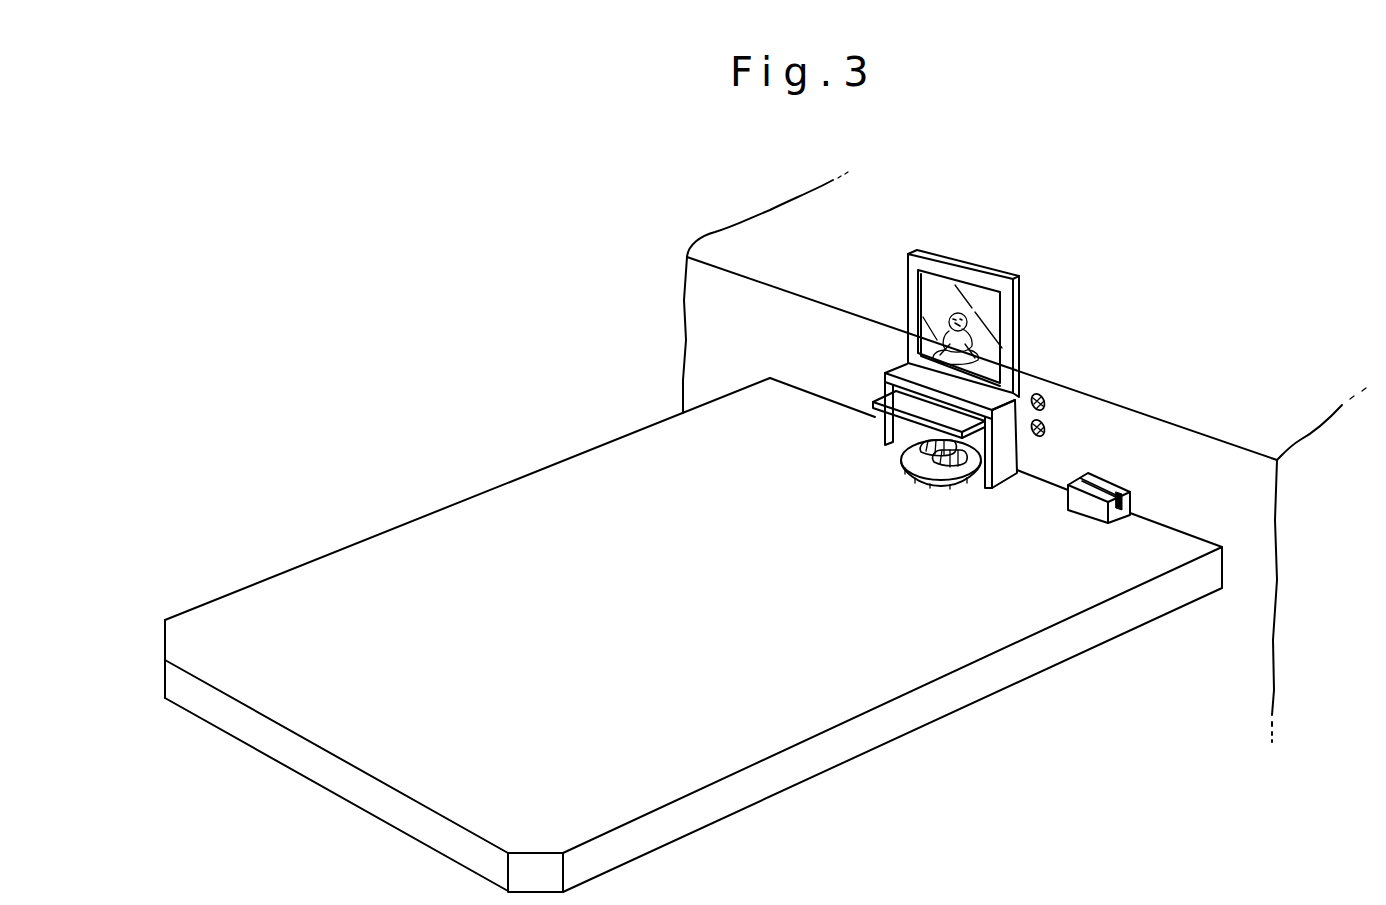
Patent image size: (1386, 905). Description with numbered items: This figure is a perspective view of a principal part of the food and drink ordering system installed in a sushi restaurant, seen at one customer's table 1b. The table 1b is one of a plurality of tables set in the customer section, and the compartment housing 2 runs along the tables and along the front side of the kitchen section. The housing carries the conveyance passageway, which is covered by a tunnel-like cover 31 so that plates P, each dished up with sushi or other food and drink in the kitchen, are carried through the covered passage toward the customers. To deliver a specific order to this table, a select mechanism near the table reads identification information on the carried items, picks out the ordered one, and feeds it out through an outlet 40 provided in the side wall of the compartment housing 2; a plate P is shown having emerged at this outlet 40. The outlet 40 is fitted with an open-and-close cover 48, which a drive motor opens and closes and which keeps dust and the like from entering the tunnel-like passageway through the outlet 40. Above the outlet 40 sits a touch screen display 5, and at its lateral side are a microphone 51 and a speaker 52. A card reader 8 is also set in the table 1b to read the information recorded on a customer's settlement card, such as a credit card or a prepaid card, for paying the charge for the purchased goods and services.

The compartment housing 2 is at (700, 325).
The tunnel-like cover 31 is at (1247, 505).
The table 1b is at (920, 657).
The touch screen display 5 is at (980, 263).
The outlet 40 is at (900, 430).
The open-and-close cover 48 is at (903, 405).
The plate P is at (923, 485).
The microphone 51 is at (1042, 395).
The speaker 52 is at (1045, 420).
The card reader 8 is at (1085, 503).